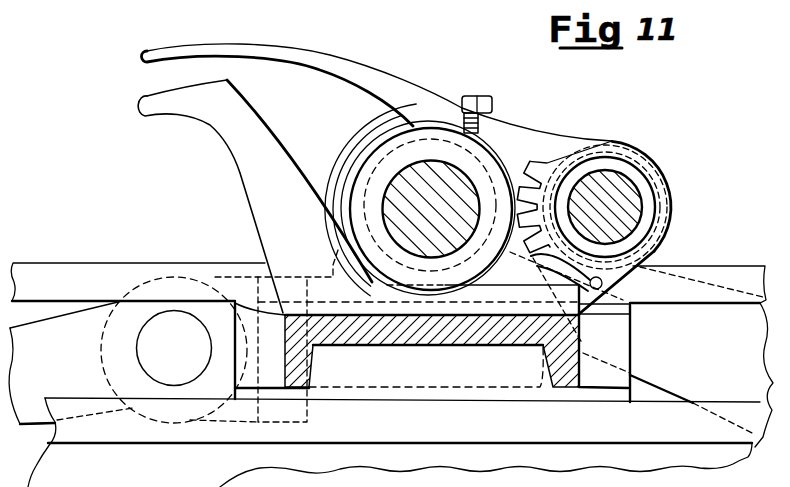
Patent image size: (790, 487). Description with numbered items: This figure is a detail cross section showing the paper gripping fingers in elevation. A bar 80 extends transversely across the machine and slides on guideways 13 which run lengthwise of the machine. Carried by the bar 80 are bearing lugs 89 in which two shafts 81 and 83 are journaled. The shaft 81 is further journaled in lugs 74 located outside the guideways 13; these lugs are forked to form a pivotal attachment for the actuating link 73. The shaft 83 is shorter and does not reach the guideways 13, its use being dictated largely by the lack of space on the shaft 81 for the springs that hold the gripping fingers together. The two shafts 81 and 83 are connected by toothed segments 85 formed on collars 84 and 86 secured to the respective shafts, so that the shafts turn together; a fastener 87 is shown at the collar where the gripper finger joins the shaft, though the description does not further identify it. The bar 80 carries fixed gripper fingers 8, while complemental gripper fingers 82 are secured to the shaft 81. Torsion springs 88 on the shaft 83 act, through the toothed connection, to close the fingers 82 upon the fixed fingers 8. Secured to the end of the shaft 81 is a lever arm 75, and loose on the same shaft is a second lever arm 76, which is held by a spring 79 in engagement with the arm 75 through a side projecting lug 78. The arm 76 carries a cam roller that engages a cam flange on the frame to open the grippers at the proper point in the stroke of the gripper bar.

The fixed gripper finger 8 is at (240, 157).
The guideway 13 is at (110, 250).
The actuating link 73 is at (71, 363).
The lug 74 is at (125, 375).
The lever arm 75 is at (583, 341).
The lever arm 76 is at (696, 350).
The side projecting lug 78 is at (630, 303).
The spring 79 is at (345, 155).
The bar 80 is at (412, 348).
The shaft 81 is at (393, 212).
The complemental gripper finger 82 is at (321, 64).
The shaft 83 is at (622, 196).
The collar 84 is at (645, 167).
The toothed segment 85 is at (545, 164).
The collar 86 is at (380, 150).
The screw 87 is at (506, 84).
The torsion spring 88 is at (660, 207).
The bearing lug 89 is at (565, 147).